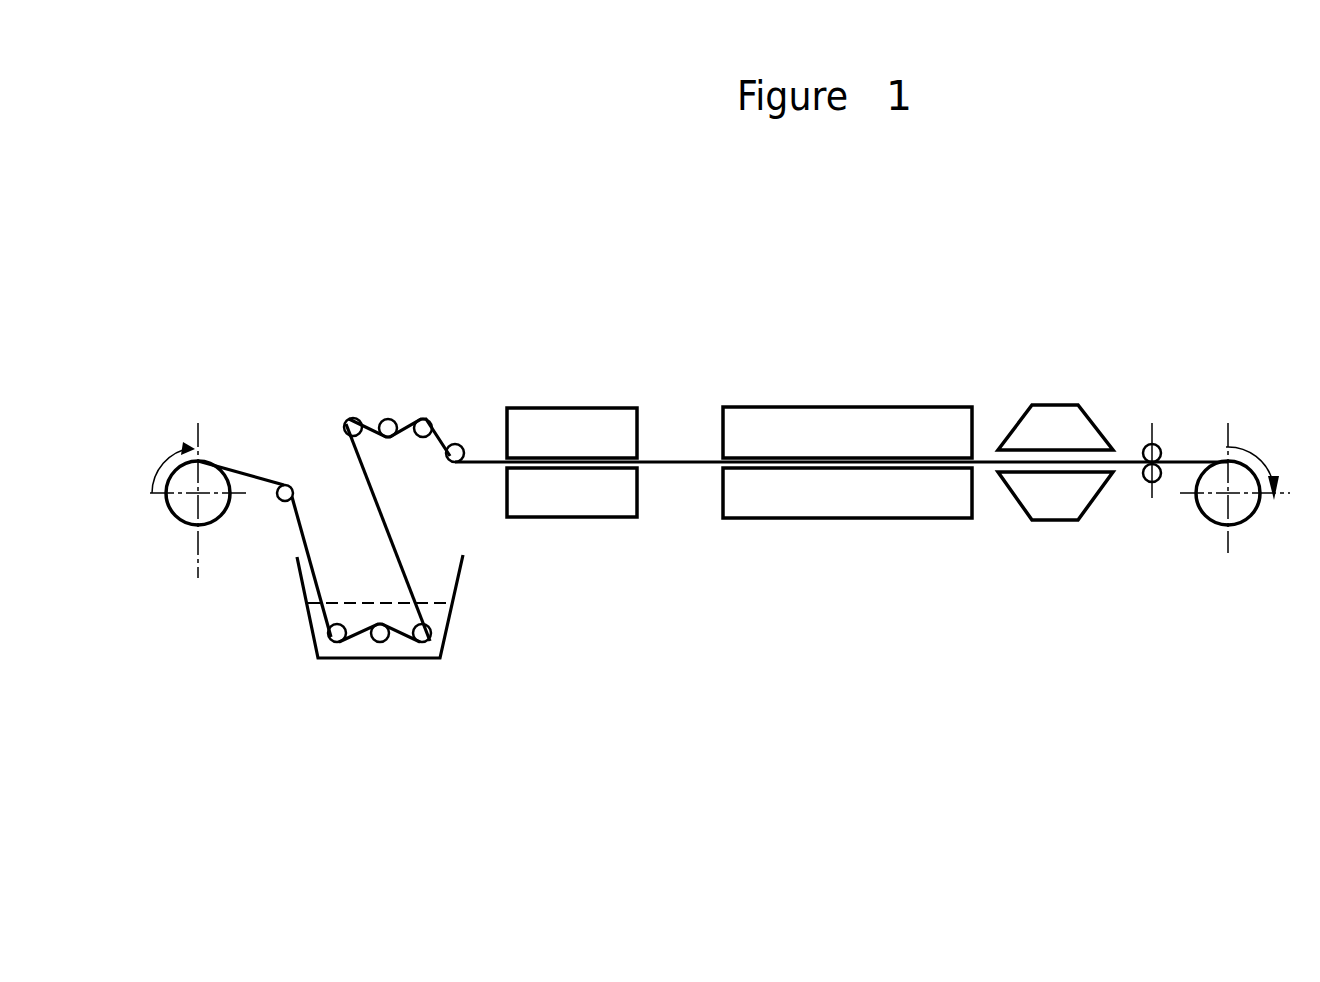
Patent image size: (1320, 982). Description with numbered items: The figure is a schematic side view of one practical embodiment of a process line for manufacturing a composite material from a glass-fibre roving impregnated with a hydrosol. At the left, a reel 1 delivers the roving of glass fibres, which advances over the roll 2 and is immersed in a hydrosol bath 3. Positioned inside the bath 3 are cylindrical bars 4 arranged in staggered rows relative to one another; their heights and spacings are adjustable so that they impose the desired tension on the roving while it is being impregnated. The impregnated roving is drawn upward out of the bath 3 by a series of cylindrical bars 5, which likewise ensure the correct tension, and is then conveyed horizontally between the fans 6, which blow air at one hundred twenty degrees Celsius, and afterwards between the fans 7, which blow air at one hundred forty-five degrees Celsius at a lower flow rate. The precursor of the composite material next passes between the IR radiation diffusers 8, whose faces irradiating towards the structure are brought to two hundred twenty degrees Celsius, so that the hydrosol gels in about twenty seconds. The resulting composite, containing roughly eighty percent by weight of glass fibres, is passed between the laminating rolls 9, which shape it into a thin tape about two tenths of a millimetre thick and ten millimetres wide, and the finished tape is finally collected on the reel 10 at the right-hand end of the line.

The reel 1 is at (170, 512).
The roll 2 is at (281, 502).
The hydrosol bath 3 is at (445, 614).
The cylindrical bars 4 is at (422, 645).
The series of cylindrical bars 5 is at (455, 440).
The fans 6 is at (600, 408).
The fans 7 is at (912, 407).
The IR radiation diffusers 8 is at (1055, 405).
The laminating rolls 9 is at (1152, 444).
The reel 10 is at (1236, 522).